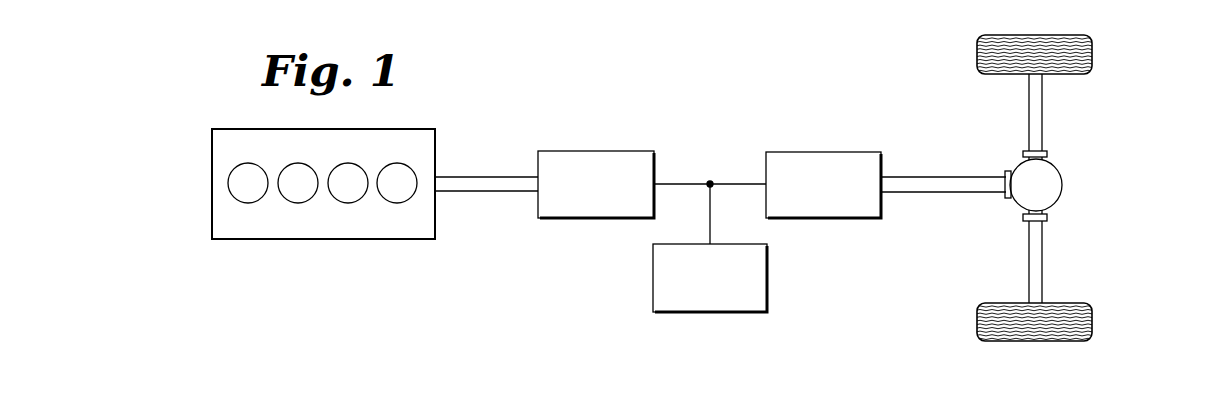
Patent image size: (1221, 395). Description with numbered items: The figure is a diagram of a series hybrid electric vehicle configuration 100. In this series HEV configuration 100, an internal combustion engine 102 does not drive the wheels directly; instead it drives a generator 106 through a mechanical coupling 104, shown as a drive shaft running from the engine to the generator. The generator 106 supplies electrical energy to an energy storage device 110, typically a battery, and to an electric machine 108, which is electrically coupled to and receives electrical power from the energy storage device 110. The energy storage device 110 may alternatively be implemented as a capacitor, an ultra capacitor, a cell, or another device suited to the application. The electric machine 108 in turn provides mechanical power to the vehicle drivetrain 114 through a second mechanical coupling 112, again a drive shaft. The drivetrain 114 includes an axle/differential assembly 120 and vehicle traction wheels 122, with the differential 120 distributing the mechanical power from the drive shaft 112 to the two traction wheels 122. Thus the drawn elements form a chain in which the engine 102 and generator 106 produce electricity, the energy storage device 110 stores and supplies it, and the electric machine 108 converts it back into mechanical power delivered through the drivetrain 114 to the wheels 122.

The series HEV configuration 100 is at (657, 81).
The internal combustion engine 102 is at (283, 241).
The mechanical coupling 104 is at (486, 195).
The generator 106 is at (592, 151).
The electric machine 108 is at (828, 152).
The energy storage device 110 is at (768, 282).
The mechanical coupling 112 is at (912, 198).
The vehicle drivetrain 114 is at (1130, 36).
The axle/differential assembly 120 is at (1056, 169).
The vehicle traction wheels 122 is at (1058, 75).